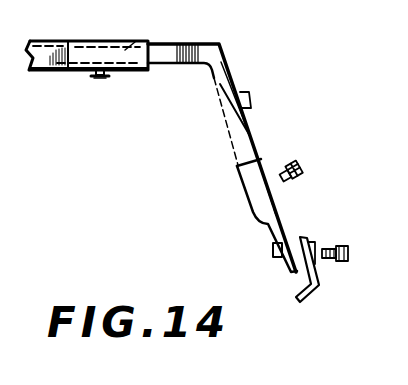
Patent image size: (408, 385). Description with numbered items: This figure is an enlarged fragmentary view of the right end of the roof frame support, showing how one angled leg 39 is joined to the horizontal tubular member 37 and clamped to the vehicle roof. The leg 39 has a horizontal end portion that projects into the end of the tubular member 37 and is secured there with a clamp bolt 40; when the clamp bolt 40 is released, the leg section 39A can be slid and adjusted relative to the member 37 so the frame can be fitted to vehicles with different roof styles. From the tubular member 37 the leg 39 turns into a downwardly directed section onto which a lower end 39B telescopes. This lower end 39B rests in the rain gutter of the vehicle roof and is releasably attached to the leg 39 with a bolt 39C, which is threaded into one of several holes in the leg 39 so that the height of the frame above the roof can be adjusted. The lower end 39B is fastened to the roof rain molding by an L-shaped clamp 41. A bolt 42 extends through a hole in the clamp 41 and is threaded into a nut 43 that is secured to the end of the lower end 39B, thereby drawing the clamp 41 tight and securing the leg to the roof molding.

The tubular member 37 is at (83, 41).
The angled leg 39 is at (212, 73).
The leg section 39A is at (135, 42).
The lower end 39B is at (245, 204).
The bolt 39C is at (296, 162).
The clamp bolt 40 is at (98, 80).
The L-shaped clamp 41 is at (309, 300).
The bolt 42 is at (338, 246).
The nut 43 is at (273, 250).